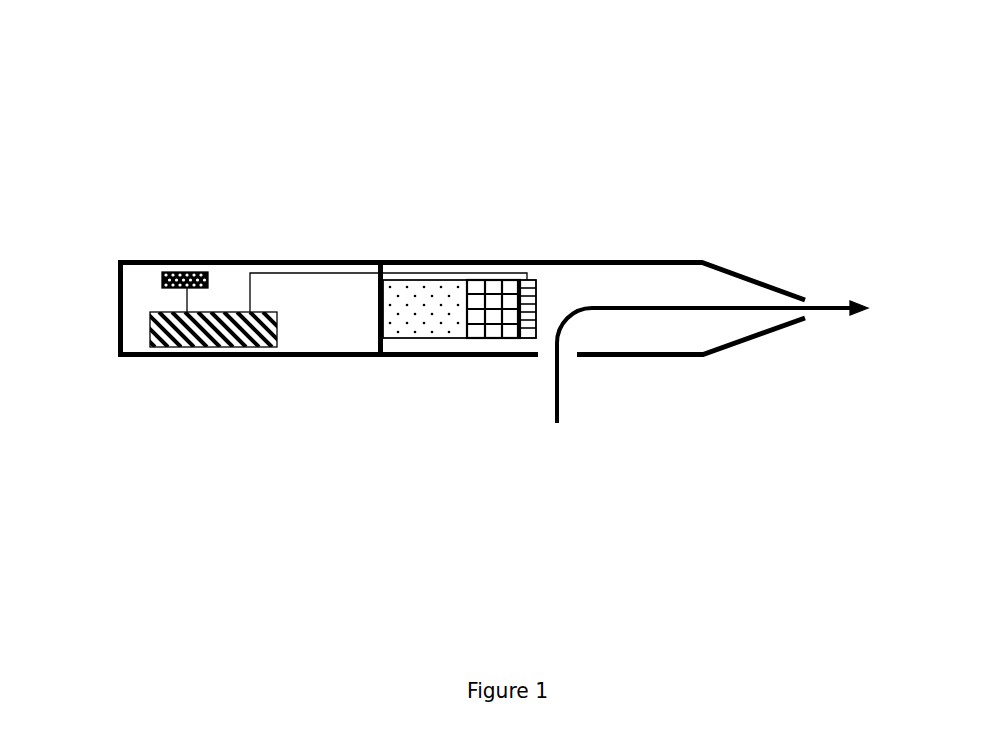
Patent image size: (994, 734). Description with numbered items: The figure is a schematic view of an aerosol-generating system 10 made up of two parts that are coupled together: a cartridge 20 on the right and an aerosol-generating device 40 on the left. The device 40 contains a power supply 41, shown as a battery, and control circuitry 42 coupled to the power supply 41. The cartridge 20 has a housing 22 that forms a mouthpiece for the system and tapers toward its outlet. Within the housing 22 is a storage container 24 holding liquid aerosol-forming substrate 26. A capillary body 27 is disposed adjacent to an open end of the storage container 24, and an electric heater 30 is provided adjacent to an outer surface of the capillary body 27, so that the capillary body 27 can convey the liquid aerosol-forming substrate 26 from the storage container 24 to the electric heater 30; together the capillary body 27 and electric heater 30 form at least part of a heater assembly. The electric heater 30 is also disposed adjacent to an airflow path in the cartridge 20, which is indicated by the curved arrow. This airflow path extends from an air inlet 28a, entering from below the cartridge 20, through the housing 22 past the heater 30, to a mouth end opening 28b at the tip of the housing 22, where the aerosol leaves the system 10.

The aerosol-generating system 10 is at (116, 144).
The cartridge 20 is at (388, 493).
The housing 22 is at (667, 262).
The storage container 24 is at (411, 340).
The liquid aerosol-forming substrate 26 is at (403, 298).
The capillary body 27 is at (497, 338).
The air inlet 28a is at (588, 383).
The mouth end opening 28b is at (826, 287).
The electric heater 30 is at (540, 292).
The aerosol-generating device 40 is at (125, 493).
The power supply 41 is at (166, 345).
The control circuitry 42 is at (176, 266).